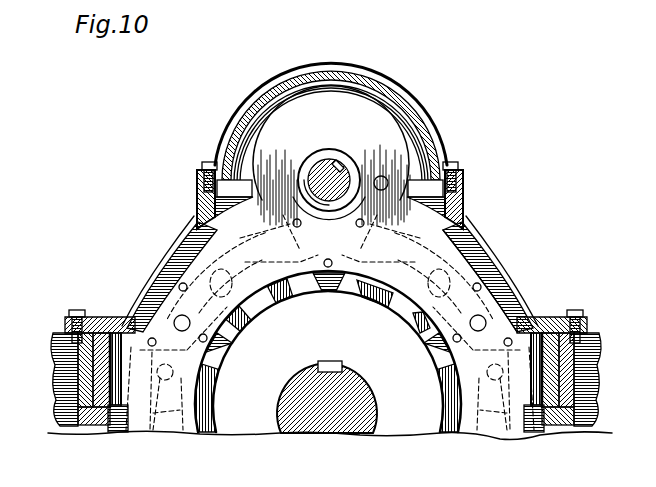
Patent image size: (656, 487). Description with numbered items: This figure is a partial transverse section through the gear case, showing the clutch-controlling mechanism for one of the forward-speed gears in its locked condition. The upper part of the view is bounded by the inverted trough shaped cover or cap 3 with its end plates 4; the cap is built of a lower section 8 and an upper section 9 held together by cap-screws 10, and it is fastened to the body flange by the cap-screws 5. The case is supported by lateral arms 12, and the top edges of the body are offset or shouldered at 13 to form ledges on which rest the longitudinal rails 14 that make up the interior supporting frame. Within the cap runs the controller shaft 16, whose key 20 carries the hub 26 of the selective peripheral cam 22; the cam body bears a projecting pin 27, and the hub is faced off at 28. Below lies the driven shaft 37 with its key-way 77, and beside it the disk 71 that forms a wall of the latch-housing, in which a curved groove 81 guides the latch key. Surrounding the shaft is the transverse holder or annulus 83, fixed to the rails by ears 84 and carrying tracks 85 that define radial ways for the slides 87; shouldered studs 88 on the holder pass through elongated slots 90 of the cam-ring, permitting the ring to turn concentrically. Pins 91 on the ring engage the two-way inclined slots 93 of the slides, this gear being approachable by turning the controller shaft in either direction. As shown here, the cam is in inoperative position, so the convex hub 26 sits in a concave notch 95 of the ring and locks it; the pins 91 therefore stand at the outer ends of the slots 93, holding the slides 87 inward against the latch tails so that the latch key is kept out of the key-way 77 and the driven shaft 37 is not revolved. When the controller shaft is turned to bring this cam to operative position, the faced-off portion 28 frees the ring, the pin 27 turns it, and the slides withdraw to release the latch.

The cover or cap 3 is at (498, 268).
The end plates 4 is at (478, 246).
The cap-screws 5 is at (77, 312).
The lower section 8 is at (466, 213).
The upper section 9 is at (421, 122).
The cap-screws 10 is at (455, 165).
The lateral arms 12 is at (53, 380).
The shouldered top edges 13 is at (60, 398).
The longitudinal rails 14 is at (72, 427).
The controller shaft 16 is at (345, 162).
The key 20 is at (348, 158).
The peripheral cam 22 is at (331, 155).
The hub 26 is at (324, 150).
The projecting pin 27 is at (381, 176).
The faced-off portion 28 is at (345, 257).
The driven shaft 37 is at (337, 433).
The disk 71 is at (268, 433).
The key-way 77 is at (334, 360).
The curved groove 81 is at (574, 317).
The annulus 83 is at (133, 345).
The ears 84 is at (92, 428).
The tracks 85 is at (511, 293).
The slides 87 is at (515, 446).
The shouldered studs 88 is at (328, 361).
The elongated slots 90 is at (440, 373).
The pins 91 is at (197, 230).
The slots 93 is at (178, 243).
The concave notches 95 is at (337, 240).